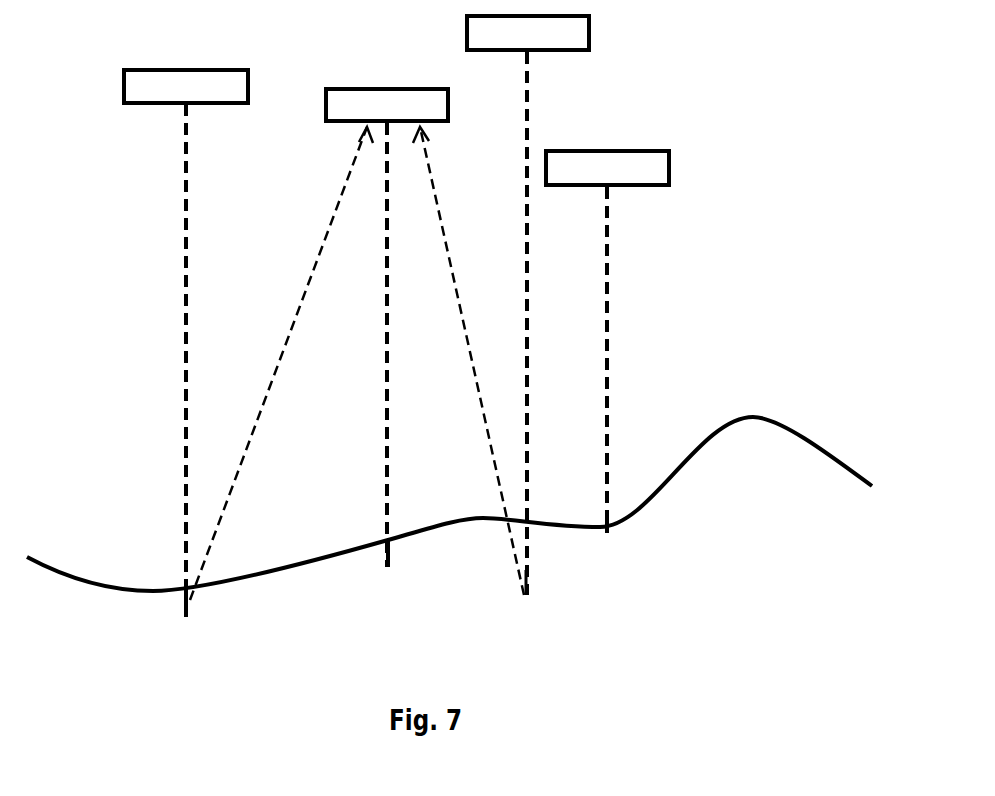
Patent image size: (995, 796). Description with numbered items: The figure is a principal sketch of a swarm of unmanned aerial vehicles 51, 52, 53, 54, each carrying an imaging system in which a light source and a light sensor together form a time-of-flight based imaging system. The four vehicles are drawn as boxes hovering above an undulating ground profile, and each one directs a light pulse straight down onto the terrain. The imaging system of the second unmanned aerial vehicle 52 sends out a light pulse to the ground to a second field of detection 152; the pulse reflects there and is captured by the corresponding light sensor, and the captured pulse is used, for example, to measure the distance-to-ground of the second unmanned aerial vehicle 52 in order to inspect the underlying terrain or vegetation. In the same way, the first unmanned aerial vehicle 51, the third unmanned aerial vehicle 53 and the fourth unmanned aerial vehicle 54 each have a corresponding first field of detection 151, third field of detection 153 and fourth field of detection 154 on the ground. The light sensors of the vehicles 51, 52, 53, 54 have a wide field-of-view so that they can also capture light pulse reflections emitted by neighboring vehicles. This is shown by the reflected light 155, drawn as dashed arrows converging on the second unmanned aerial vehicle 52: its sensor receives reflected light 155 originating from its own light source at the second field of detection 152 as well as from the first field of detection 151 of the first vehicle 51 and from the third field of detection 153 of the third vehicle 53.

The first unmanned aerial vehicle 51 is at (249, 88).
The second unmanned aerial vehicle 52 is at (450, 105).
The third unmanned aerial vehicle 53 is at (591, 33).
The fourth unmanned aerial vehicle 54 is at (671, 168).
The first field of detection 151 is at (186, 617).
The second field of detection 152 is at (388, 567).
The third field of detection 153 is at (525, 595).
The fourth field of detection 154 is at (608, 533).
The reflected light 155 is at (252, 433).